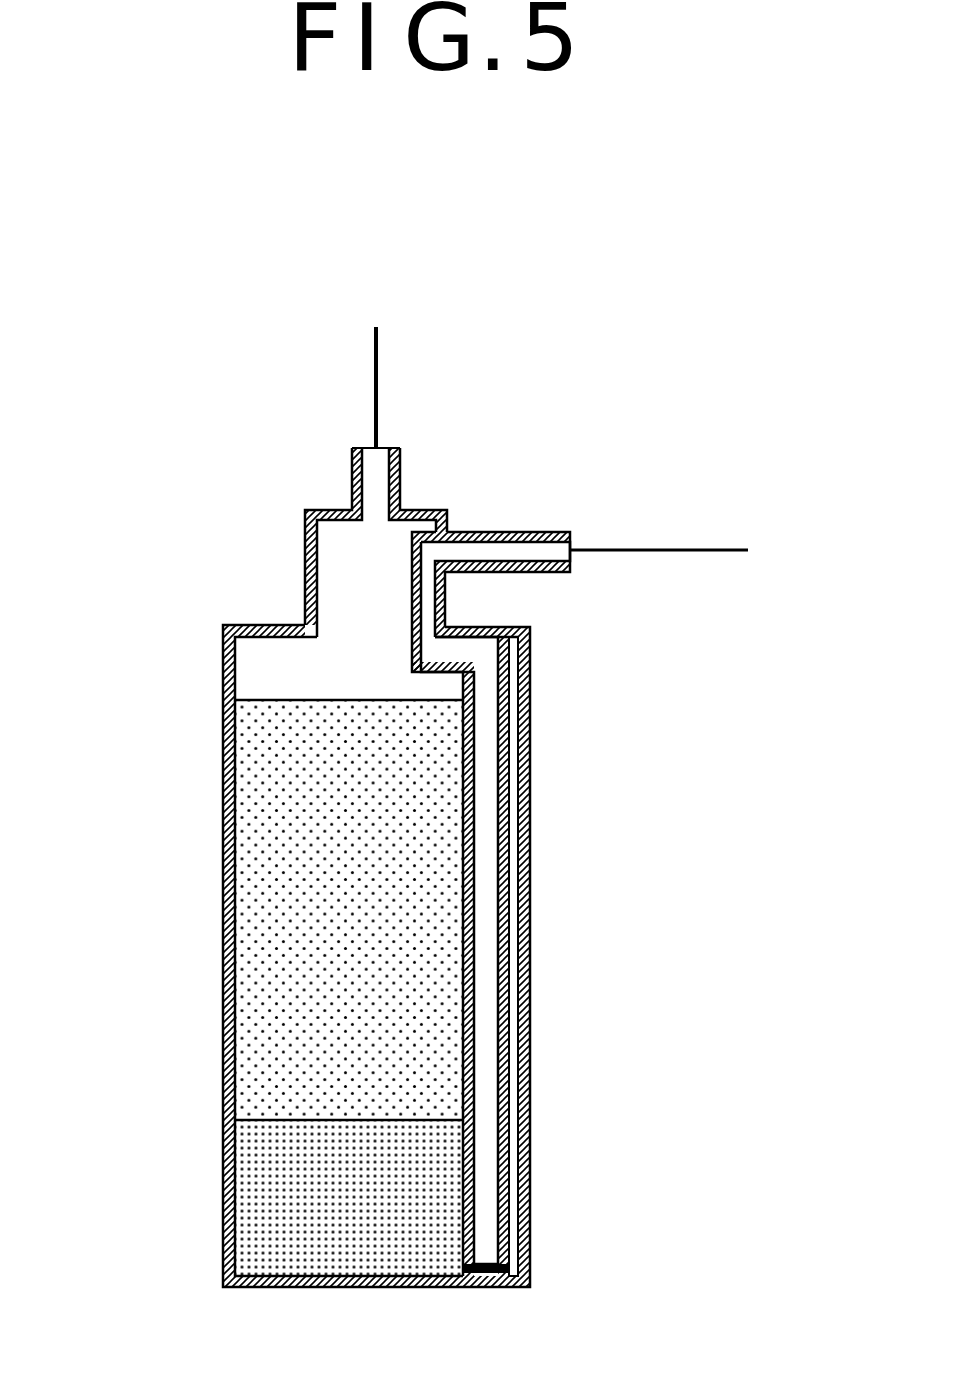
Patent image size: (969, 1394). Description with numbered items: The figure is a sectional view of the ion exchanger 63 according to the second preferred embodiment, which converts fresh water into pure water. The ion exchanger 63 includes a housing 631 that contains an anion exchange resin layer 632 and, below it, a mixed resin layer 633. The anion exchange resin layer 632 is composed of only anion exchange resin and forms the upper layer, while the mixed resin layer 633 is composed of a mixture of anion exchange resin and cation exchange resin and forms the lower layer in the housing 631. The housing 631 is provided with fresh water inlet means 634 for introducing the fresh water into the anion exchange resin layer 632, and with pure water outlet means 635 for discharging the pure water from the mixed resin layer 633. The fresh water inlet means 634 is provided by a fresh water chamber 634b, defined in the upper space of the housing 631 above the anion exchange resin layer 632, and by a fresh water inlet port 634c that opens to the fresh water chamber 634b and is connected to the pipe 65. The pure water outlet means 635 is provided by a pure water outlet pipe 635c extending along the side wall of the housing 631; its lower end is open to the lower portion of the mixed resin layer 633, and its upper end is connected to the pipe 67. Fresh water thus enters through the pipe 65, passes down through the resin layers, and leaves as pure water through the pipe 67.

The ion exchanger 63 is at (186, 600).
The housing 631 is at (222, 960).
The anion exchange resin layer 632 is at (247, 815).
The mixed resin layer 633 is at (247, 1187).
The fresh water inlet means 634 is at (405, 488).
The fresh water chamber 634b is at (245, 667).
The fresh water inlet port 634c is at (350, 482).
The pure water outlet means 635 is at (540, 592).
The pure water outlet pipe 635c is at (513, 532).
The pipe 65 is at (380, 375).
The pipe 67 is at (718, 550).